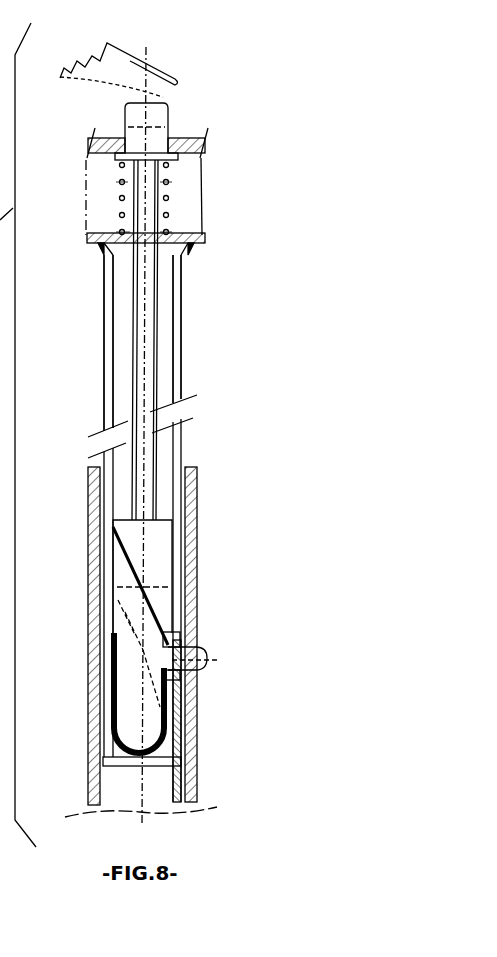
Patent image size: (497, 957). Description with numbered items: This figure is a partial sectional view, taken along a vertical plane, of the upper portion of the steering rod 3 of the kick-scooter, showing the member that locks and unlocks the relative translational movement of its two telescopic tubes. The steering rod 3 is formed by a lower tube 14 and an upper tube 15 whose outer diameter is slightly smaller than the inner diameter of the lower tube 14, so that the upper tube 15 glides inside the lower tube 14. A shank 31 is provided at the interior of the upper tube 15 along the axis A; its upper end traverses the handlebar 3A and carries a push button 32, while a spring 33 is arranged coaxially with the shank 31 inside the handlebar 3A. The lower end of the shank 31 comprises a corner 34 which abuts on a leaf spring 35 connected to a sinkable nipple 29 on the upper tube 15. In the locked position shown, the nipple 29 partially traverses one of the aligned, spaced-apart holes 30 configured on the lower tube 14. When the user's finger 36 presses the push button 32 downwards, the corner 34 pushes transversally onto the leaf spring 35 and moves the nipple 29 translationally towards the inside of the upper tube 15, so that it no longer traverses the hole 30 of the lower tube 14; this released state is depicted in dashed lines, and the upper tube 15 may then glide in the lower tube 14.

The longitudinal axis A is at (142, 43).
The steering rod 3 is at (222, 414).
The handlebar 3A is at (192, 145).
The lower tube 14 is at (192, 500).
The upper tube 15 is at (181, 295).
The sinkable nipple 29 is at (197, 652).
The holes 30 is at (195, 678).
The shank 31 is at (149, 370).
The push button 32 is at (160, 115).
The spring 33 is at (167, 198).
The corner 34 is at (158, 565).
The leaf spring 35 is at (167, 727).
The finger 36 is at (160, 72).